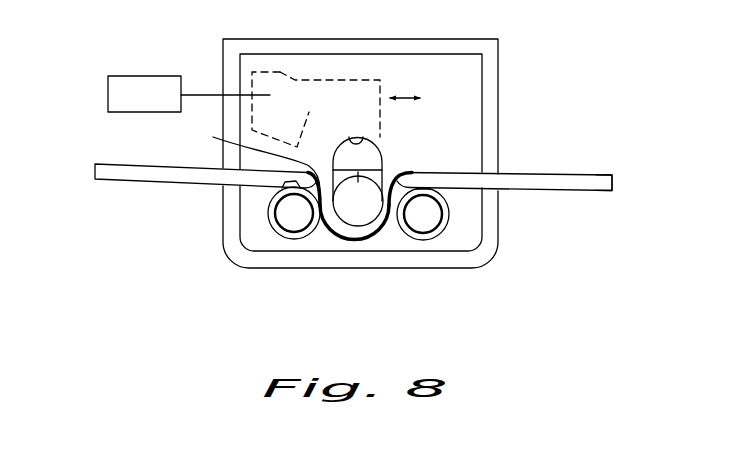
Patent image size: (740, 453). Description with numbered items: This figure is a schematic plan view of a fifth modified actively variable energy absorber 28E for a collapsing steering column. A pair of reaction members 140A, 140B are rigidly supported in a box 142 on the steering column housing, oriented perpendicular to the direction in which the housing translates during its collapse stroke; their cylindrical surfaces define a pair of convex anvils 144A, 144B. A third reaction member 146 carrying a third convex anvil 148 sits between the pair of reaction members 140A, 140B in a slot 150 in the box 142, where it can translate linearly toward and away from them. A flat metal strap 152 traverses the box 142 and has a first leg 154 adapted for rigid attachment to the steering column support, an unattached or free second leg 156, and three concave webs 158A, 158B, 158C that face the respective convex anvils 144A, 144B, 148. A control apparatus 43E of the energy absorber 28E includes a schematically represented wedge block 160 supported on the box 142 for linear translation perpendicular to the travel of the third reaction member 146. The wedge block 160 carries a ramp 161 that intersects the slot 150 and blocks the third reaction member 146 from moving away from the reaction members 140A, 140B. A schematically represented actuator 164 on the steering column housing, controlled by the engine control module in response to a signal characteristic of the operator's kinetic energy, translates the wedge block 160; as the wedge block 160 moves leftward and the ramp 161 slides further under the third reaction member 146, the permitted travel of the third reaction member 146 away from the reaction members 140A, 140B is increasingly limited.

The fifth modified actively variable energy absorber 28E is at (508, 43).
The control apparatus 43E is at (199, 78).
The reaction member 140A is at (290, 243).
The reaction member 140B is at (455, 221).
The box 142 is at (493, 100).
The convex anvil 144A is at (282, 188).
The convex anvil 144B is at (440, 194).
The third reaction member 146 is at (362, 172).
The third convex anvil 148 is at (358, 227).
The slot 150 is at (352, 137).
The flat metal strap 152 is at (532, 170).
The first leg 154 is at (607, 175).
The second leg 156 is at (110, 176).
The concave web 158A is at (246, 166).
The concave web 158B is at (399, 174).
The concave web 158C is at (384, 235).
The wedge block 160 is at (301, 79).
The ramp 161 is at (281, 109).
The actuator 164 is at (120, 88).